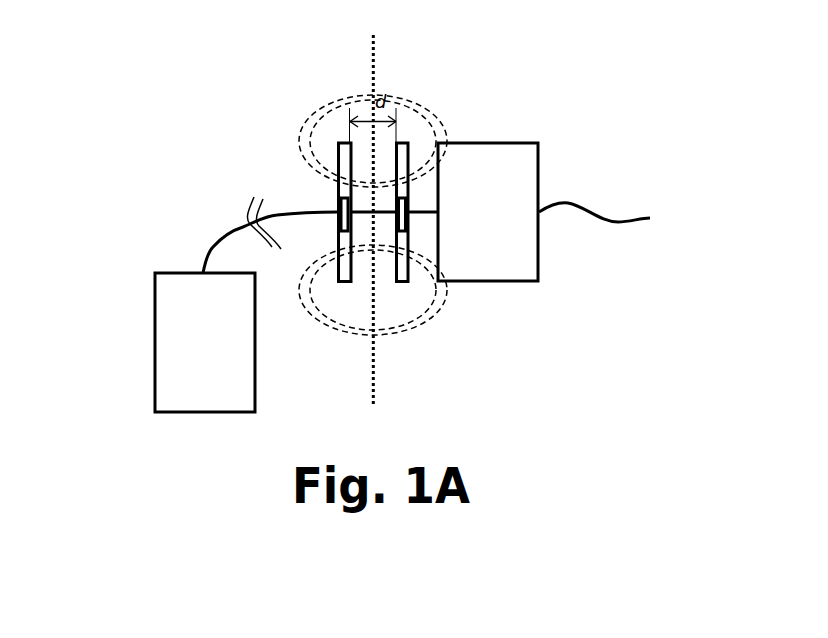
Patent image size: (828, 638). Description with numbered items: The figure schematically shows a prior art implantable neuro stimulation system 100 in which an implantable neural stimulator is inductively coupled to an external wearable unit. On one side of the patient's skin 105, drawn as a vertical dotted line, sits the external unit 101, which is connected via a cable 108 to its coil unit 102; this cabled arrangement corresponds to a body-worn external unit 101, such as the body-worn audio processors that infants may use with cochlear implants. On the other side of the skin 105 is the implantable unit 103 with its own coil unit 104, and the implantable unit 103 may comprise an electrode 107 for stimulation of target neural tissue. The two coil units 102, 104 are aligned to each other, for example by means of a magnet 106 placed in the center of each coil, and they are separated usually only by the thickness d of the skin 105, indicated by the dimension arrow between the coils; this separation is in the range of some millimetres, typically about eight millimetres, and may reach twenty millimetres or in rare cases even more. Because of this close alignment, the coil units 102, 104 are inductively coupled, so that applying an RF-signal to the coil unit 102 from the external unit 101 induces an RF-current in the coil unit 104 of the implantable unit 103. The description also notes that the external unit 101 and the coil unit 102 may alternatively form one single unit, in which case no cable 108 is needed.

The implantable neuro stimulation system 100 is at (634, 61).
The external unit 101 is at (160, 362).
The coil unit 102 is at (337, 165).
The implantable unit 103 is at (525, 150).
The coil unit 104 is at (408, 152).
The skin 105 is at (368, 57).
The magnet 106 is at (342, 282).
The electrode 107 is at (602, 212).
The cable 108 is at (212, 247).